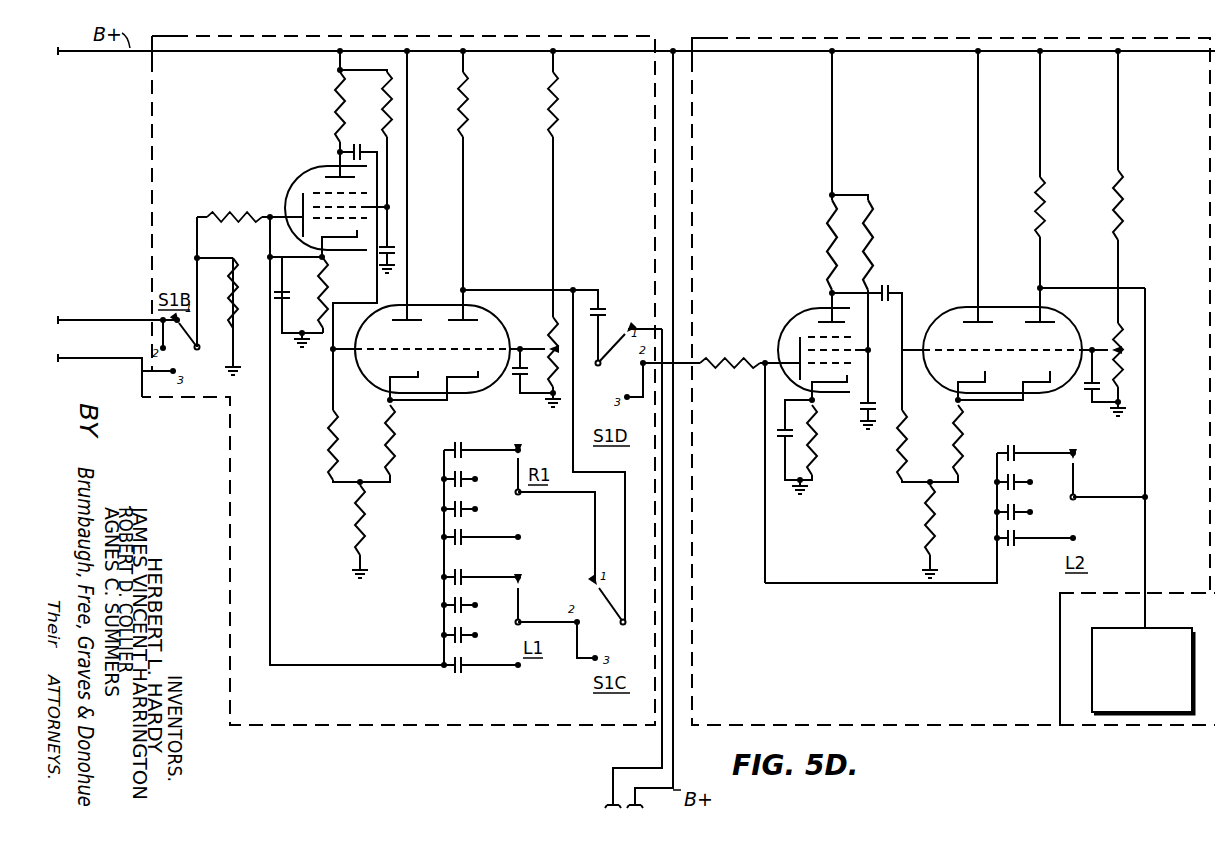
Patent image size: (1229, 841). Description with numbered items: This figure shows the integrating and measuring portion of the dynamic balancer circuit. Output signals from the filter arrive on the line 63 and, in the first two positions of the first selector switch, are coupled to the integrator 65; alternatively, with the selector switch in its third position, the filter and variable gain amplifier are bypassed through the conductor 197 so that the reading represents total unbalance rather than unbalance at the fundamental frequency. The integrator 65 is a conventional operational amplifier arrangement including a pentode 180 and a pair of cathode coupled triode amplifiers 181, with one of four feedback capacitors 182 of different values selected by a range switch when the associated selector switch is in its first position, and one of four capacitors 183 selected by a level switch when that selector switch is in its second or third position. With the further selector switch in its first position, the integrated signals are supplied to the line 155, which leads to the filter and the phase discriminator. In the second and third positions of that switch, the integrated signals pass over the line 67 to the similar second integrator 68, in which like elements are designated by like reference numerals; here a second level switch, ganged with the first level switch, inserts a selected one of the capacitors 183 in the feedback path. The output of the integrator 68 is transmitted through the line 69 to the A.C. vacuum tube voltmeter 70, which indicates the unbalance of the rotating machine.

The line 63 is at (102, 316).
The integrator 65 is at (151, 98).
The line 67 is at (671, 352).
The second integrator 68 is at (1060, 725).
The line 69 is at (1146, 558).
The A.C. vacuum tube voltmeter 70 is at (1113, 627).
The line 155 is at (660, 745).
The pentode 180 is at (312, 160).
The cathode coupled triode amplifiers 181 is at (473, 393).
The feedback capacitors 182 is at (462, 452).
The capacitors 183 is at (462, 579).
The line 197 is at (101, 352).